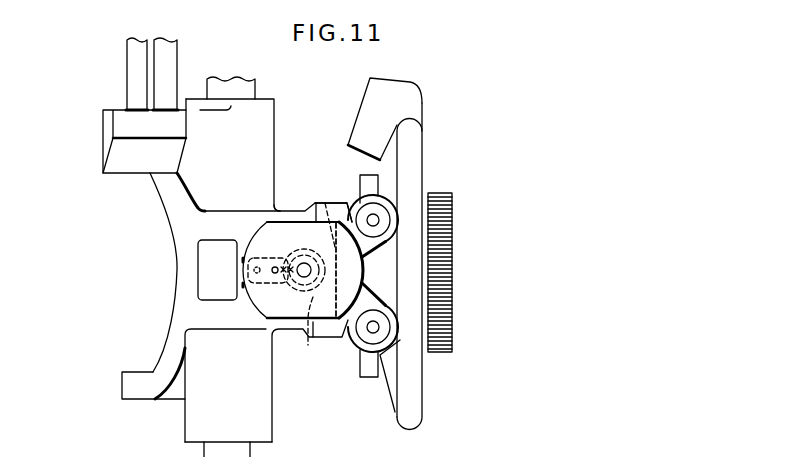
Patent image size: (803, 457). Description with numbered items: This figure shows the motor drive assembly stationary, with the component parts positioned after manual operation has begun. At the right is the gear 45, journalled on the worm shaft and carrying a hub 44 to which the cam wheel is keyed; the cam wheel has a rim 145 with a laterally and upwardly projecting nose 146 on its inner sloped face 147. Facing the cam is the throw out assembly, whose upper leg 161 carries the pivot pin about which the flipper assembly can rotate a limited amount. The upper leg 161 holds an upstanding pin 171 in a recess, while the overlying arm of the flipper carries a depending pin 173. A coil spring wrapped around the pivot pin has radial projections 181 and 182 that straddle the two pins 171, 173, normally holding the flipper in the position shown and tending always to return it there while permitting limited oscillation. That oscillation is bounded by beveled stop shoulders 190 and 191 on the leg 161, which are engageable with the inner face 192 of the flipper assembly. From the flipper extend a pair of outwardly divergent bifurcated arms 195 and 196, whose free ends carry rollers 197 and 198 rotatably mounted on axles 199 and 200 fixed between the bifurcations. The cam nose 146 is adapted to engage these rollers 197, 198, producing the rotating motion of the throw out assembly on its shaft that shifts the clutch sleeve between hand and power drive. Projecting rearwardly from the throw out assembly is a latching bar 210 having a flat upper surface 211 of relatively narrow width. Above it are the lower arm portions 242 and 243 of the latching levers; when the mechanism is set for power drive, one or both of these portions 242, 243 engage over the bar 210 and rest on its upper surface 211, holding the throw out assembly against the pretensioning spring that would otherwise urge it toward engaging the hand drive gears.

The hub 44 is at (353, 192).
The gear 45 is at (450, 223).
The rim 145 is at (413, 400).
The nose 146 is at (388, 100).
The inner sloped face 147 is at (393, 408).
The upper leg 161 is at (260, 220).
The upstanding pin 171 is at (262, 260).
The depending pin 173 is at (276, 273).
The radial projection 181 is at (243, 295).
The radial projection 182 is at (244, 252).
The beveled stop shoulder 190 is at (307, 211).
The beveled stop shoulder 191 is at (310, 340).
The inner face 192 is at (330, 204).
The bifurcated arm 195 is at (370, 243).
The bifurcated arm 196 is at (365, 303).
The roller 197 is at (398, 213).
The roller 198 is at (402, 338).
The axle 199 is at (340, 242).
The axle 200 is at (364, 350).
The latching bar 210 is at (122, 162).
The flat upper surface 211 is at (128, 132).
The lower arm portion 242 is at (128, 66).
The lower arm portion 243 is at (176, 70).